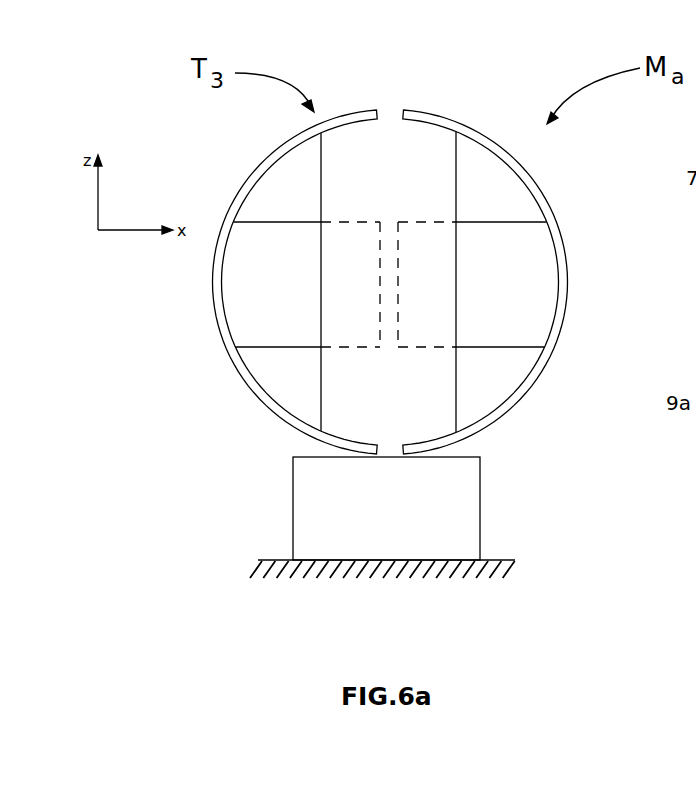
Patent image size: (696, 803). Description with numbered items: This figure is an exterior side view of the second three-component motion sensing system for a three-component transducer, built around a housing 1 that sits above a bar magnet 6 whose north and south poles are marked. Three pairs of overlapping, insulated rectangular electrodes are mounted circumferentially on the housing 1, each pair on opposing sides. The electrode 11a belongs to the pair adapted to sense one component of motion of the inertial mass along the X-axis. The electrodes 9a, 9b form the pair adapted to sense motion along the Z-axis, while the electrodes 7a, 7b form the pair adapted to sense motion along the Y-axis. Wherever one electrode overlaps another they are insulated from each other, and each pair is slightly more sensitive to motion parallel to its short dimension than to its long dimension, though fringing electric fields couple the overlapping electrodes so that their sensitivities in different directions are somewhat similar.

The housing 1 is at (487, 186).
The magnet 6 is at (480, 507).
The electrode 7a is at (293, 432).
The electrode 7b is at (547, 359).
The electrode 9a is at (293, 337).
The electrode 9b is at (503, 218).
The electrode 11a is at (456, 157).